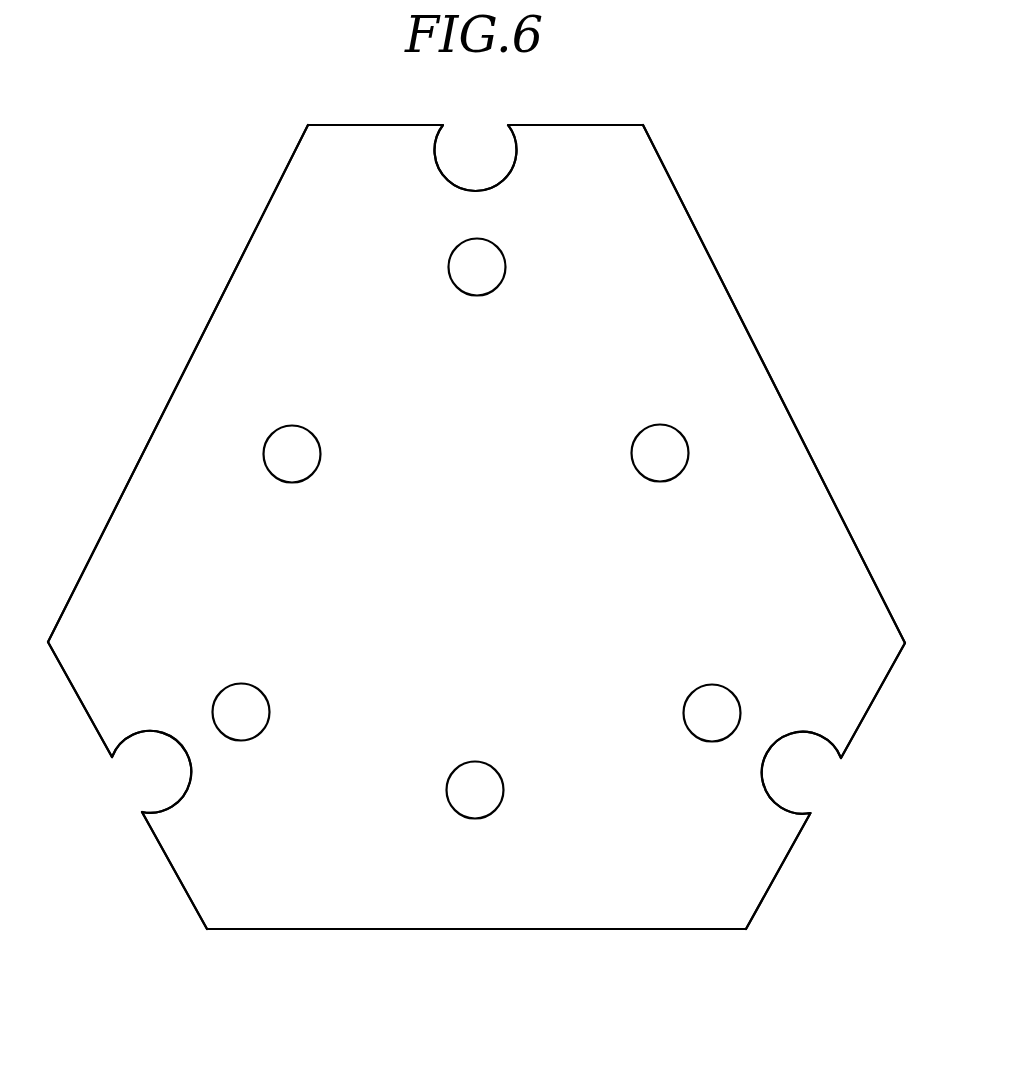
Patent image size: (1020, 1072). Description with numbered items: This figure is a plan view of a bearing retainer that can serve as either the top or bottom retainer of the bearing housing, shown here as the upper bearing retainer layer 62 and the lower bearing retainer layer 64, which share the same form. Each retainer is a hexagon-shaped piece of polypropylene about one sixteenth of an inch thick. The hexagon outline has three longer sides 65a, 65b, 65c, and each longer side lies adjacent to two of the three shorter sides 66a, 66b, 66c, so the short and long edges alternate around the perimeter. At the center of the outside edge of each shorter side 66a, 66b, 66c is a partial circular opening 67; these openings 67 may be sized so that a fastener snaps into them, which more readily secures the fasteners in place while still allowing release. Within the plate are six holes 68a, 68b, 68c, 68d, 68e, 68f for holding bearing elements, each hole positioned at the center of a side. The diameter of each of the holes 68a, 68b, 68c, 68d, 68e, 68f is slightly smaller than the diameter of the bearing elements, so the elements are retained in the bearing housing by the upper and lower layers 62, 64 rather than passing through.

The upper bearing retainer layer 62 is at (474, 482).
The lower bearing retainer layer 64 is at (259, 111).
The longer side 65a is at (303, 928).
The longer side 65b is at (748, 333).
The longer side 65c is at (248, 243).
The shorter side 66a is at (190, 902).
The shorter side 66b is at (760, 907).
The shorter side 66c is at (570, 125).
The partial circular opening 67 is at (142, 768).
The hole 68a is at (290, 427).
The hole 68b is at (242, 741).
The hole 68c is at (473, 820).
The hole 68d is at (712, 742).
The hole 68e is at (667, 426).
The hole 68f is at (498, 243).